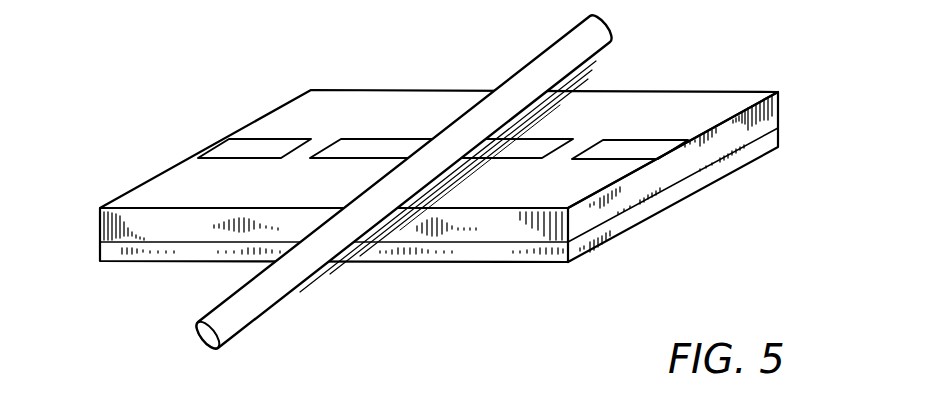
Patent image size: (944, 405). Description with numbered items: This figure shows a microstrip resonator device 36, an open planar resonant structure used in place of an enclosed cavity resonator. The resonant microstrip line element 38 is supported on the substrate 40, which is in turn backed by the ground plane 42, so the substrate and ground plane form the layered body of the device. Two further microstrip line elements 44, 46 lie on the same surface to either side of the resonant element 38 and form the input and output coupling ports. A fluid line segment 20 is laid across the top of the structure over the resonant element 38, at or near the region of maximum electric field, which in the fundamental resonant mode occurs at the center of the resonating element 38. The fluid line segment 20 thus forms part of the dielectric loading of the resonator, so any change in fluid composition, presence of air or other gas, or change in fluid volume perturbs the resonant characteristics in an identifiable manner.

The fluid line segment 20 is at (604, 49).
The microstrip resonator device 36 is at (787, 84).
The resonant microstrip line element 38 is at (380, 146).
The substrate 40 is at (120, 223).
The ground plane 42 is at (110, 250).
The microstrip line element 44 is at (226, 146).
The microstrip line element 46 is at (632, 148).